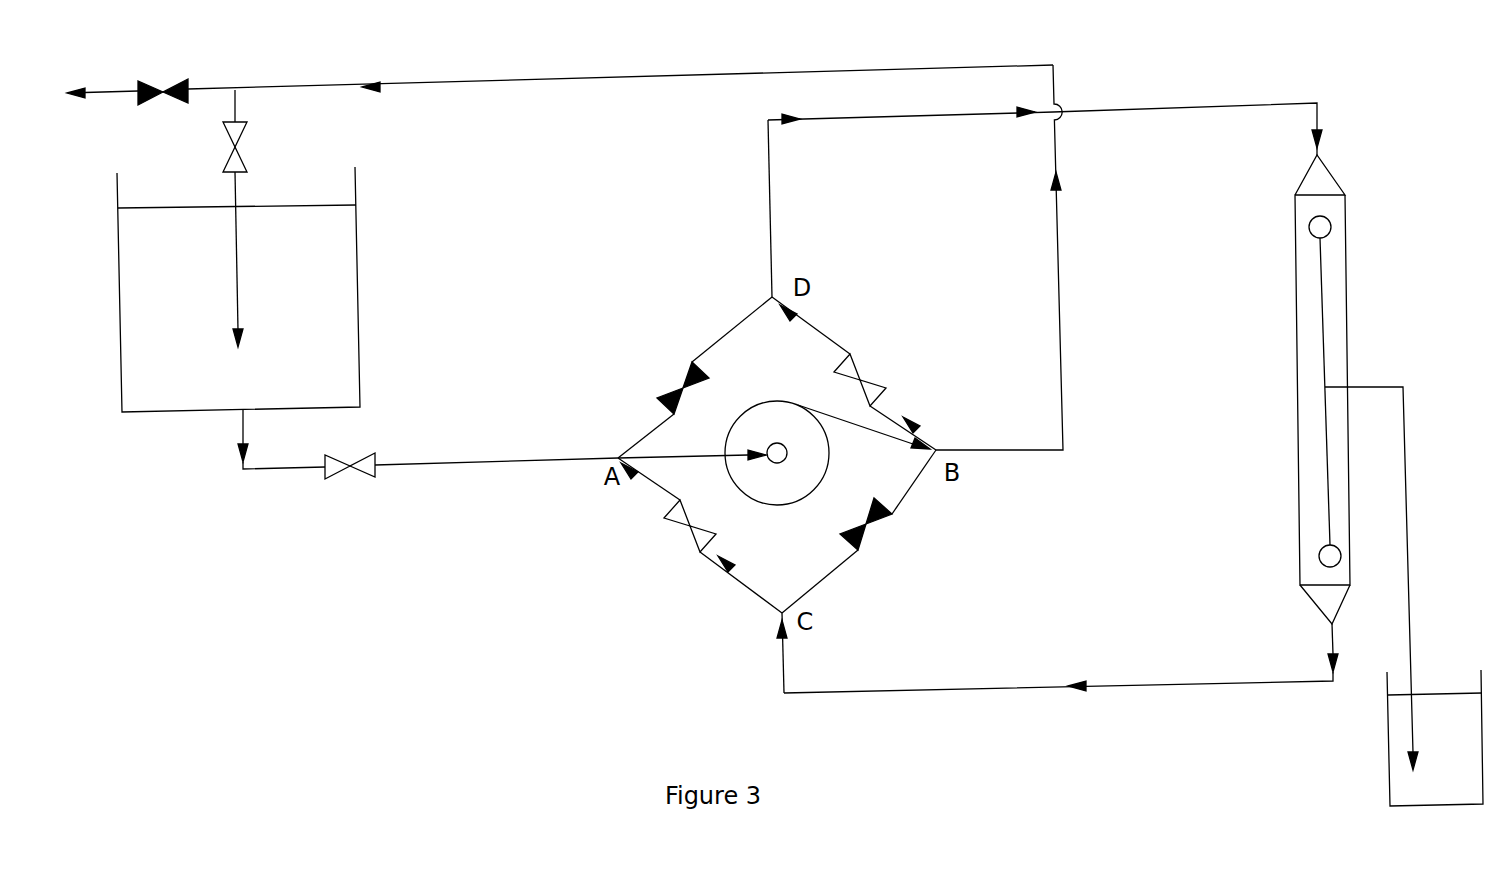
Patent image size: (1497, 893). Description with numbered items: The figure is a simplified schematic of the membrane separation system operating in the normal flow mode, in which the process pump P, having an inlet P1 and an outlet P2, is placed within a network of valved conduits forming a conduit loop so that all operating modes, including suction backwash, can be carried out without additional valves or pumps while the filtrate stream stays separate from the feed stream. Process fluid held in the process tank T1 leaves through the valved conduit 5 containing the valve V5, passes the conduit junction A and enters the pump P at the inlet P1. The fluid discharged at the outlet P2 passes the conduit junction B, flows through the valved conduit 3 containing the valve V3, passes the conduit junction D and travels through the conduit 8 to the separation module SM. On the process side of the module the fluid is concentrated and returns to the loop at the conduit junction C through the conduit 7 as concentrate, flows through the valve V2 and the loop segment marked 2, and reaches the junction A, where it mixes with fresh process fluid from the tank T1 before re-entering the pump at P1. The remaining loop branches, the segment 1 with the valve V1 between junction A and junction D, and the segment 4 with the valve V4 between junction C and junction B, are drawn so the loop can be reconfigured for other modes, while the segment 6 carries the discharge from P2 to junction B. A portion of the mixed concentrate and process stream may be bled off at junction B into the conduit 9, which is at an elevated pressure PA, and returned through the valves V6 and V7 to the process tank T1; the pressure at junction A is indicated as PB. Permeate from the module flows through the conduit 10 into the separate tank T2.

The pipe segment A to valve V1 1 is at (645, 432).
The pipe segment A to valve V2 2 is at (648, 486).
The valved conduit 3 is at (903, 424).
The pipe segment valve V4 to B 4 is at (914, 482).
The valved conduit 5 is at (413, 439).
The pump discharge line 6 is at (864, 421).
The conduit 7 is at (1061, 658).
The conduit 8 is at (1045, 116).
The conduit 9 is at (560, 70).
The conduit 10 is at (1386, 578).
The valve V1 is at (677, 382).
The valve V2 is at (681, 533).
The valve V3 is at (867, 376).
The valve V4 is at (876, 529).
The valve V5 is at (350, 483).
The valve V6 is at (257, 147).
The valve V7 is at (163, 74).
The process tank T1 is at (306, 289).
The separate tank T2 is at (1349, 738).
The process pump P is at (777, 484).
The separation module SM is at (1245, 389).
The pump inlet P1 is at (695, 442).
The pump outlet P2 is at (860, 452).
The elevated pressure PA is at (996, 399).
The pressure PB at node A PB is at (547, 402).